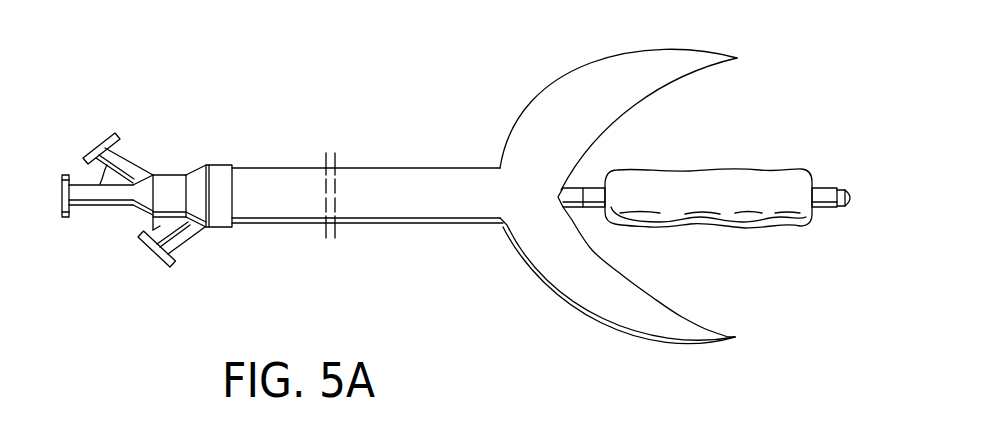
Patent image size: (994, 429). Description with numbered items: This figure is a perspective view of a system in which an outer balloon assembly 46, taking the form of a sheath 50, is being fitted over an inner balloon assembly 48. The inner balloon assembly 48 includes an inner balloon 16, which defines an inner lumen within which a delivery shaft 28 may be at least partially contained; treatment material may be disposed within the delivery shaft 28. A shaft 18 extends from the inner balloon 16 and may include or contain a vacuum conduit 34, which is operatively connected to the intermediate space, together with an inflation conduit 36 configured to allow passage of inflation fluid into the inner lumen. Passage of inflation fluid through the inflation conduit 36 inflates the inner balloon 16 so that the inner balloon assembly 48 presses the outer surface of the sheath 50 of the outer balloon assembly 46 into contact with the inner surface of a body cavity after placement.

The inner balloon 16 is at (727, 205).
The shaft 18 is at (412, 220).
The delivery shaft 28 is at (62, 195).
The vacuum conduit 34 is at (143, 258).
The inflation conduit 36 is at (100, 135).
The outer balloon assembly 46 is at (572, 180).
The inner balloon assembly 48 is at (754, 245).
The sheath 50 is at (620, 77).